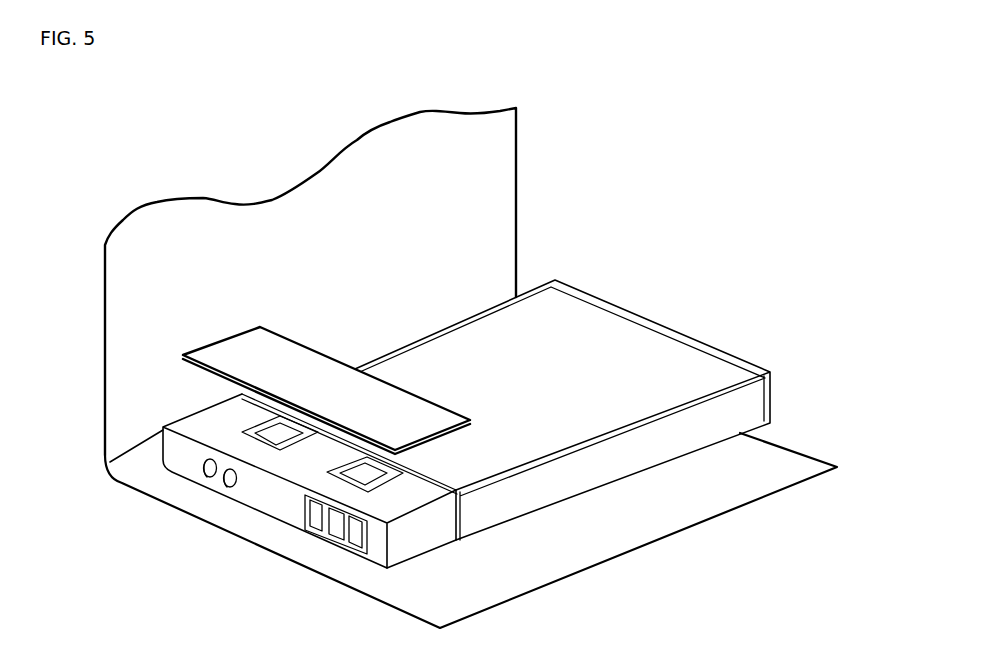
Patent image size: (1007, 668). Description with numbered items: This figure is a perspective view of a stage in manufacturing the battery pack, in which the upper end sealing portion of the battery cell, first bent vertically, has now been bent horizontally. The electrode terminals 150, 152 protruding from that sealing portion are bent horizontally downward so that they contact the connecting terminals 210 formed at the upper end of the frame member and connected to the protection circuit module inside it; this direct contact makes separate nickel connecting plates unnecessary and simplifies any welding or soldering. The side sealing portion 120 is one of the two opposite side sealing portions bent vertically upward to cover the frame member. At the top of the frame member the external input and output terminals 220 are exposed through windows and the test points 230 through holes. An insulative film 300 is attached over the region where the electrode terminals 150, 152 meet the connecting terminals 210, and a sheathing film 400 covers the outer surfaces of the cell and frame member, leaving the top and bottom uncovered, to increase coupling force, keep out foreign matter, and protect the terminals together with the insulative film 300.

The side sealing portion 120 is at (620, 455).
The electrode terminal 150 is at (384, 484).
The electrode terminal 152 is at (258, 413).
The connecting terminal 210 is at (160, 465).
The external input and output terminal 220 is at (306, 516).
The test point 230 is at (203, 477).
The insulative film 300 is at (408, 389).
The sheathing film 400 is at (517, 210).